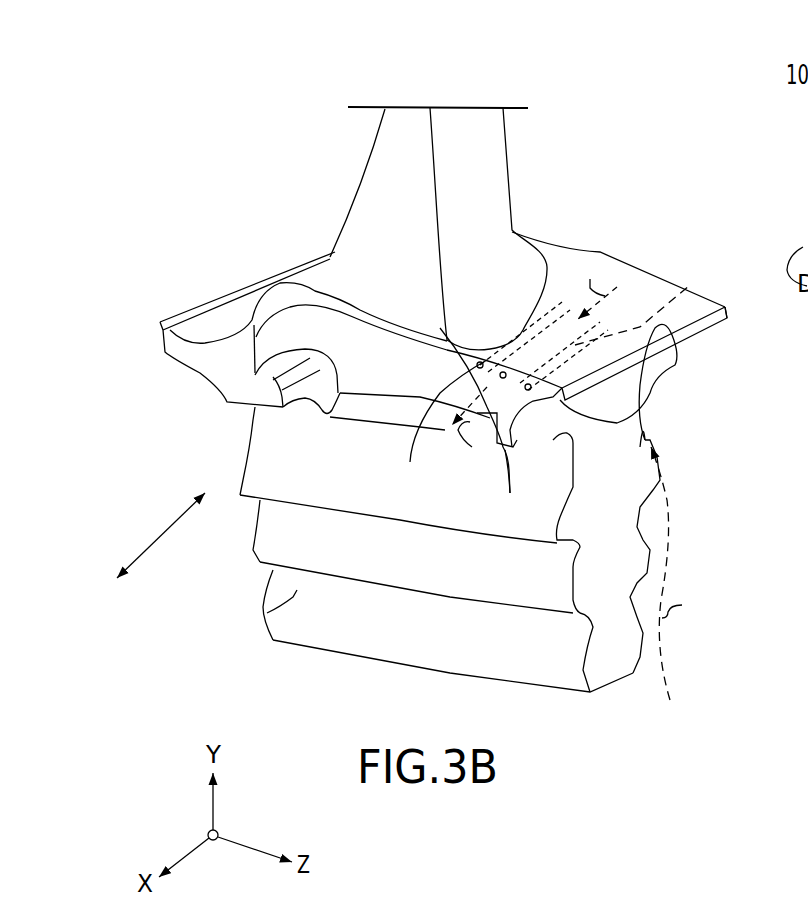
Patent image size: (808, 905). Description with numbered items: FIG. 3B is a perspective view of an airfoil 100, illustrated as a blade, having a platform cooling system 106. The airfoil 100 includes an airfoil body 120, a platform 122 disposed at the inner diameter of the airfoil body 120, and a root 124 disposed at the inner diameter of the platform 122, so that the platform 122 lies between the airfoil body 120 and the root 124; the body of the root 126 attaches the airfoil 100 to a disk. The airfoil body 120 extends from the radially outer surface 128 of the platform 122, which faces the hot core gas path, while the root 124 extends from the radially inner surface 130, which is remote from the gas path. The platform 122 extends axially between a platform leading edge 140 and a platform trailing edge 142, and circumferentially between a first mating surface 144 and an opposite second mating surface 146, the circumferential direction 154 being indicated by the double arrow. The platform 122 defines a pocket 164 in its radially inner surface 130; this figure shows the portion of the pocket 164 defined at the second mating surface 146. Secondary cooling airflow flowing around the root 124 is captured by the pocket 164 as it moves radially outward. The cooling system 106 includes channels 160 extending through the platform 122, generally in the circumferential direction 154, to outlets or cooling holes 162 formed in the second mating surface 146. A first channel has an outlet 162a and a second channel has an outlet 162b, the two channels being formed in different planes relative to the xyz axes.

The airfoil 100 is at (200, 148).
The cooling system 106 is at (580, 238).
The airfoil body 120 is at (482, 222).
The platform 122 is at (148, 278).
The root 124 is at (263, 613).
The root body 126 is at (432, 629).
The radially outer surface 128 is at (697, 294).
The radially inner surface 130 is at (250, 403).
The platform leading edge 140 is at (216, 297).
The platform trailing edge 142 is at (647, 397).
The first mating surface 144 is at (720, 294).
The second mating surface 146 is at (443, 347).
The circumferential direction 154 is at (153, 532).
The channels 160 is at (582, 375).
The cooling holes 162 is at (527, 520).
The outlet 162a is at (498, 484).
The outlet 162b is at (440, 426).
The pocket 164 is at (353, 321).